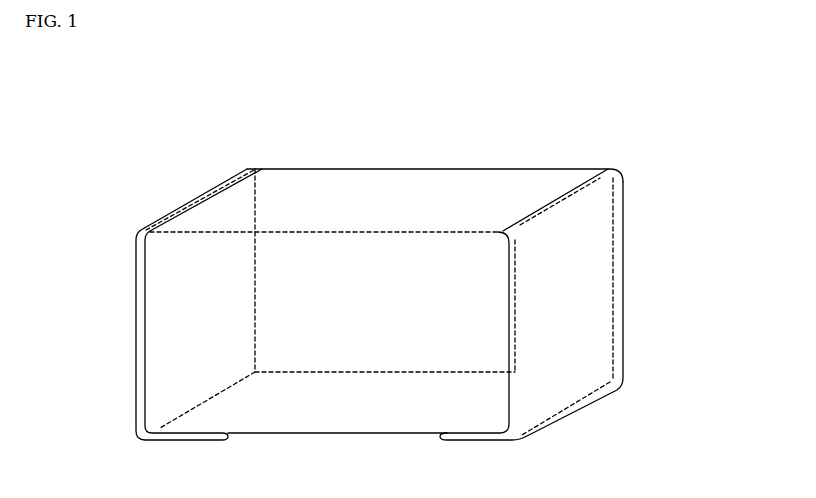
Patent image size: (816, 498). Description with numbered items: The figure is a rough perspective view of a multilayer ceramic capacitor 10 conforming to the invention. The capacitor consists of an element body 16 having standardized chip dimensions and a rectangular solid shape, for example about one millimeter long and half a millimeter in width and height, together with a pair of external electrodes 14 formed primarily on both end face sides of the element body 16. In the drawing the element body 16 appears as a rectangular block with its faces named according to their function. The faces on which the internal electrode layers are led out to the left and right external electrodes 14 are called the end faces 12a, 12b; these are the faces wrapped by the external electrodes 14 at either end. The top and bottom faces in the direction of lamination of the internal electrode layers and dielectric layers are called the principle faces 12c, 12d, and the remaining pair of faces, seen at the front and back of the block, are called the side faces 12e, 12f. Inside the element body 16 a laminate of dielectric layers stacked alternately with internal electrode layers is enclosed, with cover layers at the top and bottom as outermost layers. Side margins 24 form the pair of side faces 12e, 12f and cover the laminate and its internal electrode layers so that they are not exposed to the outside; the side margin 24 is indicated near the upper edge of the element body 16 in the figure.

The multilayer ceramic capacitor 10 is at (380, 281).
The end face 12a is at (172, 316).
The end face 12b is at (583, 286).
The principle face 12c is at (368, 191).
The principle face 12d is at (392, 408).
The side face 12e is at (280, 403).
The side face 12f is at (426, 196).
The external electrode 14 is at (137, 380).
The element body 16 is at (331, 197).
The side margin 24 is at (275, 230).